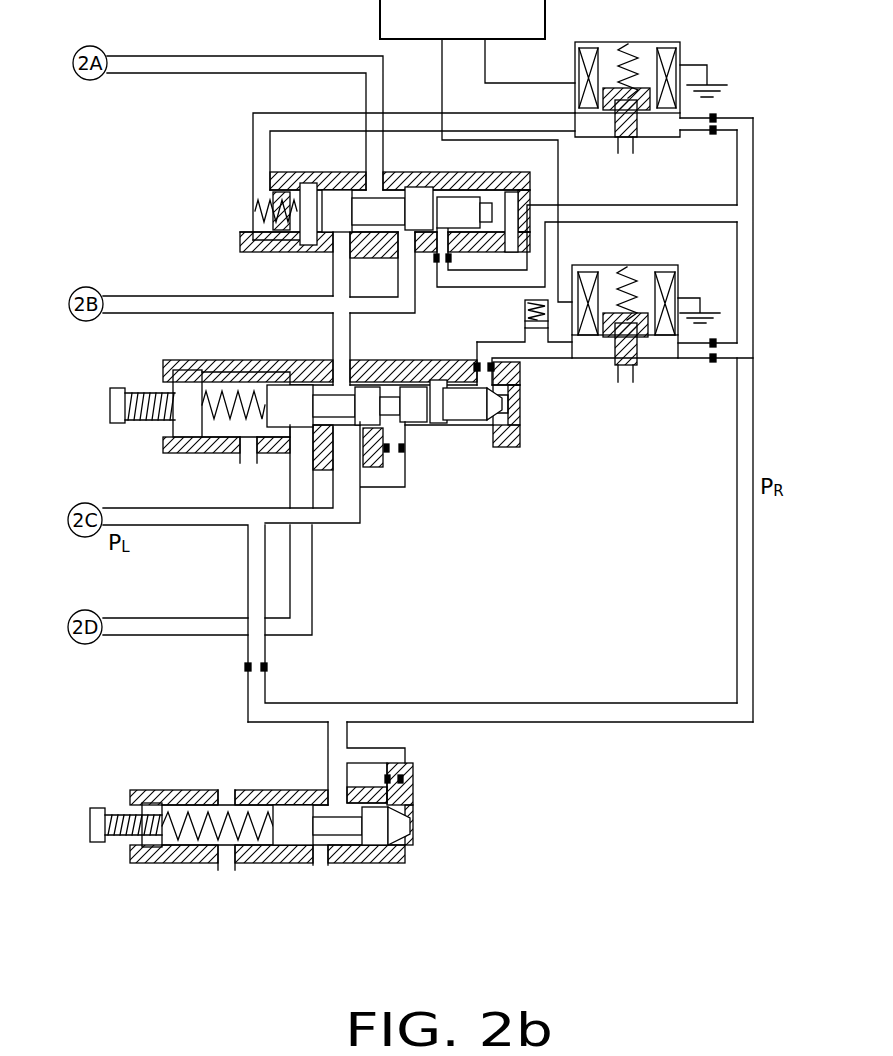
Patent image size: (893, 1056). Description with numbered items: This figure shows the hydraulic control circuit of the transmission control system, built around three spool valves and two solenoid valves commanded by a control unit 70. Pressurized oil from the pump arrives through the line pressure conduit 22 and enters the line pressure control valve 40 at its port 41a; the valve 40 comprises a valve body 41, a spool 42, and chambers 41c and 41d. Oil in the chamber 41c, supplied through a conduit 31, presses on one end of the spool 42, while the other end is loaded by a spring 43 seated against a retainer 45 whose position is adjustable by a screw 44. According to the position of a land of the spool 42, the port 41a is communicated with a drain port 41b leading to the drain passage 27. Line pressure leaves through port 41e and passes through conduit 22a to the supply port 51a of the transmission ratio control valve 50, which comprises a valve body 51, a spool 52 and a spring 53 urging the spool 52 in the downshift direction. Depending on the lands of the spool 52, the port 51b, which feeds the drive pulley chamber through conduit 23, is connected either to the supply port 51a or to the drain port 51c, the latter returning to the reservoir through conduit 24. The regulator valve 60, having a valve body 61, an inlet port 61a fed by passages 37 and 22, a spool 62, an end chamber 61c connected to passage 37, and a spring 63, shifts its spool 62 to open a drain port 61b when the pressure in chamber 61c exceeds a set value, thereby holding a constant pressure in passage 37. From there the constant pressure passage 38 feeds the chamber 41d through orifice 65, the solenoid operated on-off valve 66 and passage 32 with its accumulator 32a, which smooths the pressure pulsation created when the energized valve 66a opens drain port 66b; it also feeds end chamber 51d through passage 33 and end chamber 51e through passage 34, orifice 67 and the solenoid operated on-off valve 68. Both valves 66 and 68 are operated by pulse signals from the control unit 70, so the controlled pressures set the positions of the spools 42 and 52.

The control unit 70 is at (548, 14).
The conduit 23 is at (217, 56).
The passage 34 is at (483, 120).
The solenoid operated on-off valve 68 is at (662, 42).
The orifice 67 is at (732, 118).
The passage 33 is at (650, 205).
The transmission ratio control valve 50 is at (370, 222).
The spring 53 is at (246, 194).
The end chamber 51e is at (249, 227).
The valve body 51 is at (426, 186).
The spool 52 is at (327, 198).
The port 51b is at (375, 188).
The pressure oil supply port 51a is at (323, 256).
The drain port 51c is at (382, 272).
The end chamber 51d is at (446, 242).
The conduit 24 is at (216, 304).
The conduit 22a is at (332, 288).
The solenoid operated on-off valve 66 is at (672, 266).
The valve 66a is at (640, 352).
The drain port 66b is at (625, 385).
The orifice 65 is at (713, 364).
The passage 32 is at (557, 348).
The accumulator 32a is at (536, 333).
The line pressure control valve 40 is at (334, 438).
The screw 44 is at (118, 426).
The retainer 45 is at (187, 440).
The spring 43 is at (246, 386).
The valve body 41 is at (384, 371).
The spool 42 is at (368, 390).
The port 41e is at (344, 380).
The drain port 41b is at (300, 444).
The chamber 41c is at (397, 450).
The chamber 41d is at (505, 430).
The port 41a is at (354, 430).
The conduit 31 is at (394, 488).
The line pressure conduit 22 is at (154, 514).
The drain passage 27 is at (170, 620).
The passage 37 is at (300, 704).
The constant pressure passage 38 is at (737, 594).
The regulator valve 60 is at (292, 812).
The inlet port 61a is at (332, 794).
The spring 63 is at (230, 792).
The valve body 61 is at (299, 854).
The spool 62 is at (290, 842).
The drain port 61b is at (318, 863).
The end chamber 61c is at (404, 840).